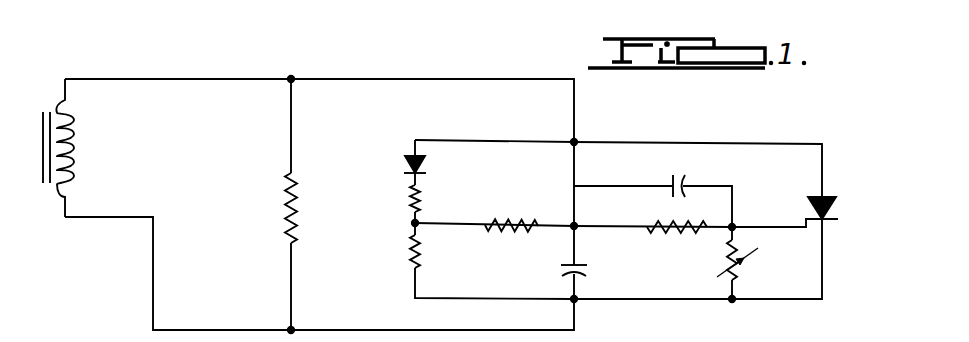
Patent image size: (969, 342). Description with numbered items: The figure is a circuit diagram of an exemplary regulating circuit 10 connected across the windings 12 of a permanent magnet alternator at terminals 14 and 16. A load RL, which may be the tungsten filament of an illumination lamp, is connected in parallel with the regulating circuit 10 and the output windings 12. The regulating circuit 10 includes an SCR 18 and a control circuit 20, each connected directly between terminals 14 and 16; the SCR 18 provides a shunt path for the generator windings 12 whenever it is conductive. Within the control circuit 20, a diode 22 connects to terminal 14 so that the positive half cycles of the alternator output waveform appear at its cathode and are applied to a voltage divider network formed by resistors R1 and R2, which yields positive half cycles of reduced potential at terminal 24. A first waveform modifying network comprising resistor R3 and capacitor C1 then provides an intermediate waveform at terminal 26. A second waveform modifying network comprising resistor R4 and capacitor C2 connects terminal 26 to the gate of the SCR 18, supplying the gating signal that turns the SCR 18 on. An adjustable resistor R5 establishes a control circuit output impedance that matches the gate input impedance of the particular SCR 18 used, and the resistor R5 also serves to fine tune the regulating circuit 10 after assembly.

The regulating circuit 10 is at (665, 127).
The windings 12 is at (77, 142).
The terminal 14 is at (577, 140).
The terminal 16 is at (575, 300).
The SCR 18 is at (835, 194).
The control circuit 20 is at (632, 258).
The diode 22 is at (426, 168).
The terminal 24 is at (413, 224).
The terminal 26 is at (577, 224).
The load RL is at (283, 193).
The resistor R1 is at (420, 196).
The resistor R2 is at (410, 258).
The resistor R3 is at (505, 217).
The resistor R4 is at (657, 230).
The adjustable resistor R5 is at (751, 260).
The capacitor C1 is at (560, 266).
The capacitor C2 is at (683, 177).